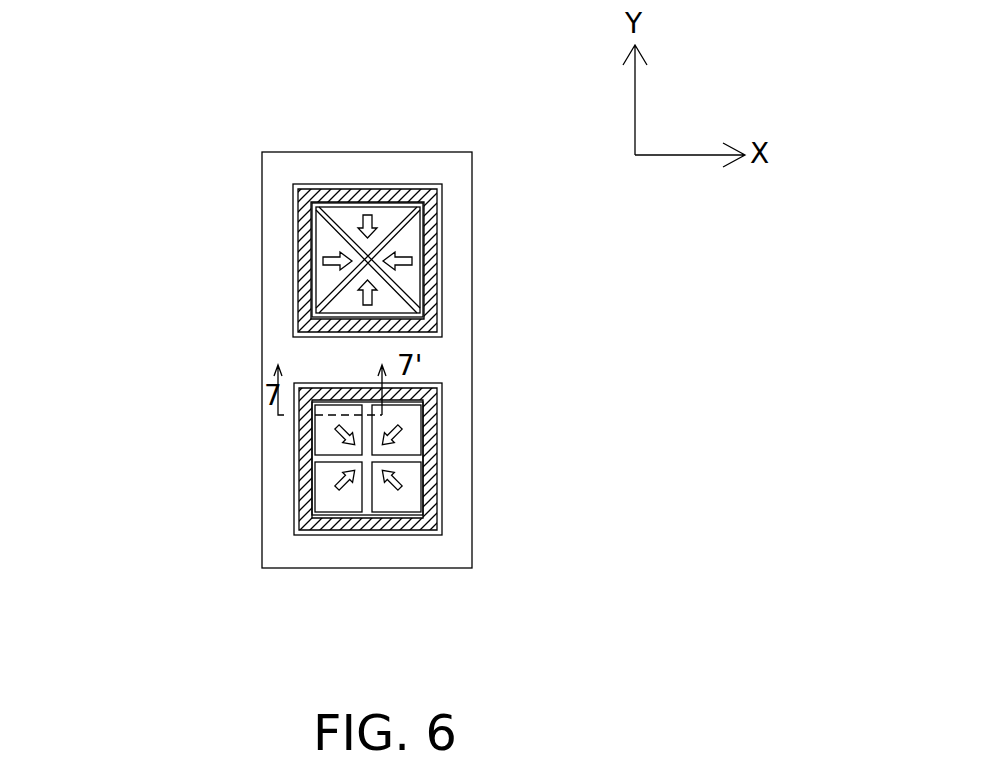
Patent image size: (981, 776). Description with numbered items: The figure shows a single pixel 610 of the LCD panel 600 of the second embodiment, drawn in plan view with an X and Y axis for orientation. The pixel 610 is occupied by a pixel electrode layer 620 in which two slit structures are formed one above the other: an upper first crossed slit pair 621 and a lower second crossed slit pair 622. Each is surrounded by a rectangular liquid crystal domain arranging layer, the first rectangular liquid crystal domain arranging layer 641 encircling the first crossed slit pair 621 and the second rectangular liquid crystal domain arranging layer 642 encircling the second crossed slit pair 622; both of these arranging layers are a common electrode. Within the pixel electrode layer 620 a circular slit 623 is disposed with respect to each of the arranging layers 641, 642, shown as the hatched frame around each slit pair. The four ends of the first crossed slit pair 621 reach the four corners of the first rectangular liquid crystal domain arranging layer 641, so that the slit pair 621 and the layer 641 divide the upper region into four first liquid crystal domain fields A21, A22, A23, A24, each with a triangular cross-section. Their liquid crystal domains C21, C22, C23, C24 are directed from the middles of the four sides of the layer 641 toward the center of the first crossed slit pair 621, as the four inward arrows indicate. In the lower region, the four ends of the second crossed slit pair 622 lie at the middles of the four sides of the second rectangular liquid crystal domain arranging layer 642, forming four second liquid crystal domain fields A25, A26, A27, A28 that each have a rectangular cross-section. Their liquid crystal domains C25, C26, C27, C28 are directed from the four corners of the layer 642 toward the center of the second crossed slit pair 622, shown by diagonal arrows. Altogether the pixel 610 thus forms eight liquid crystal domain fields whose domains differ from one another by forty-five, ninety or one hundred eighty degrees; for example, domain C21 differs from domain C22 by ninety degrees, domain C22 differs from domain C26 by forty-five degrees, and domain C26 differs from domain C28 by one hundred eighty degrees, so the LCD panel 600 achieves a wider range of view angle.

The LCD panel 600 is at (47, 42).
The pixel 610 is at (458, 141).
The pixel electrode layer 620 is at (462, 180).
The first crossed slit pair 621 is at (404, 207).
The second crossed slit pair 622 is at (370, 510).
The circular slit 623 is at (440, 215).
The first rectangular liquid crystal domain arranging layer 641 is at (298, 190).
The second rectangular liquid crystal domain arranging layer 642 is at (303, 530).
The first liquid crystal domain field A21 is at (325, 275).
The first liquid crystal domain field A22 is at (343, 210).
The first liquid crystal domain field A23 is at (405, 240).
The first liquid crystal domain field A24 is at (352, 303).
The second liquid crystal domain field A25 is at (322, 448).
The second liquid crystal domain field A26 is at (410, 442).
The second liquid crystal domain field A27 is at (410, 497).
The second liquid crystal domain field A28 is at (322, 500).
The liquid crystal domain C21 is at (325, 247).
The liquid crystal domain C22 is at (367, 203).
The liquid crystal domain C23 is at (408, 275).
The liquid crystal domain C24 is at (382, 312).
The liquid crystal domain C25 is at (337, 431).
The liquid crystal domain C26 is at (402, 428).
The liquid crystal domain C27 is at (403, 480).
The liquid crystal domain C28 is at (335, 486).